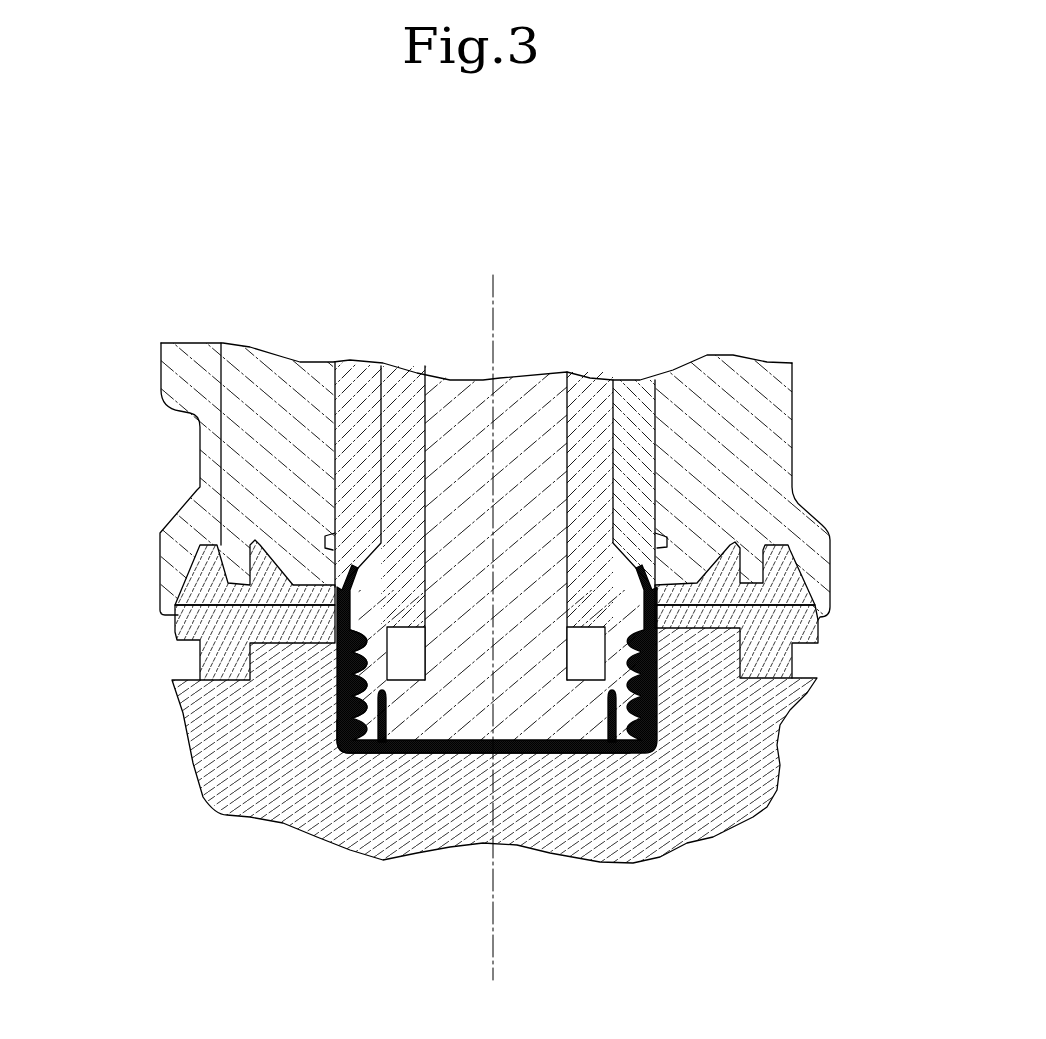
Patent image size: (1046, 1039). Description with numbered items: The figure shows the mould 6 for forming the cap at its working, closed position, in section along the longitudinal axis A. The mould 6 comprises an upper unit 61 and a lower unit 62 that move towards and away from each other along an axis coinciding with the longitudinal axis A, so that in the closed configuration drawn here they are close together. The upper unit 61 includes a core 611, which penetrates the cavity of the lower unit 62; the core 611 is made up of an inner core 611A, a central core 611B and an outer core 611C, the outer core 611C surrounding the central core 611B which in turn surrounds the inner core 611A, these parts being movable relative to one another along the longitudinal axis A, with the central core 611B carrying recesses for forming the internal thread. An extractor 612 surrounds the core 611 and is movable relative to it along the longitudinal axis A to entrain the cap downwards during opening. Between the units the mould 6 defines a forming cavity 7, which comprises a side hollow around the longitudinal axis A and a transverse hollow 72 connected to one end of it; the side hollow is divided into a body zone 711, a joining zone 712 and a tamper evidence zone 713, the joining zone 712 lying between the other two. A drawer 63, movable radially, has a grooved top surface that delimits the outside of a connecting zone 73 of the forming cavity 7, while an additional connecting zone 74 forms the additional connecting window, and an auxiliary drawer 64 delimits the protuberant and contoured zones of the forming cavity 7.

The longitudinal axis A is at (493, 313).
The mould 6 is at (845, 368).
The upper unit 61 is at (820, 467).
The core 611 is at (568, 358).
The inner core 611A is at (541, 718).
The central core 611B is at (620, 660).
The outer core 611C is at (633, 400).
The extractor 612 is at (748, 393).
The lower unit 62 is at (843, 755).
The drawer 63 is at (257, 622).
The auxiliary drawer 64 is at (782, 632).
The forming cavity 7 is at (352, 748).
The body zone 711 is at (332, 749).
The joining zone 712 is at (326, 649).
The tamper evidence zone 713 is at (333, 537).
The transverse hollow 72 is at (442, 757).
The connecting zone 73 is at (316, 607).
The additional connecting zone 74 is at (672, 612).